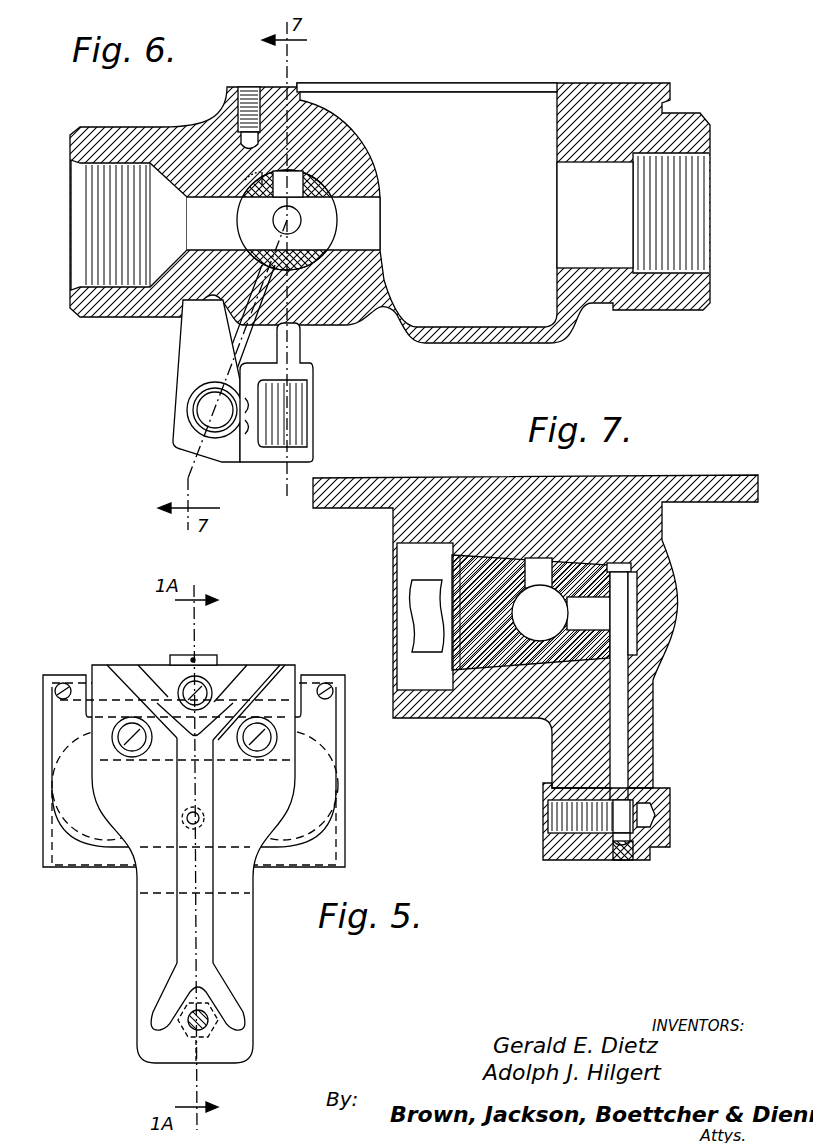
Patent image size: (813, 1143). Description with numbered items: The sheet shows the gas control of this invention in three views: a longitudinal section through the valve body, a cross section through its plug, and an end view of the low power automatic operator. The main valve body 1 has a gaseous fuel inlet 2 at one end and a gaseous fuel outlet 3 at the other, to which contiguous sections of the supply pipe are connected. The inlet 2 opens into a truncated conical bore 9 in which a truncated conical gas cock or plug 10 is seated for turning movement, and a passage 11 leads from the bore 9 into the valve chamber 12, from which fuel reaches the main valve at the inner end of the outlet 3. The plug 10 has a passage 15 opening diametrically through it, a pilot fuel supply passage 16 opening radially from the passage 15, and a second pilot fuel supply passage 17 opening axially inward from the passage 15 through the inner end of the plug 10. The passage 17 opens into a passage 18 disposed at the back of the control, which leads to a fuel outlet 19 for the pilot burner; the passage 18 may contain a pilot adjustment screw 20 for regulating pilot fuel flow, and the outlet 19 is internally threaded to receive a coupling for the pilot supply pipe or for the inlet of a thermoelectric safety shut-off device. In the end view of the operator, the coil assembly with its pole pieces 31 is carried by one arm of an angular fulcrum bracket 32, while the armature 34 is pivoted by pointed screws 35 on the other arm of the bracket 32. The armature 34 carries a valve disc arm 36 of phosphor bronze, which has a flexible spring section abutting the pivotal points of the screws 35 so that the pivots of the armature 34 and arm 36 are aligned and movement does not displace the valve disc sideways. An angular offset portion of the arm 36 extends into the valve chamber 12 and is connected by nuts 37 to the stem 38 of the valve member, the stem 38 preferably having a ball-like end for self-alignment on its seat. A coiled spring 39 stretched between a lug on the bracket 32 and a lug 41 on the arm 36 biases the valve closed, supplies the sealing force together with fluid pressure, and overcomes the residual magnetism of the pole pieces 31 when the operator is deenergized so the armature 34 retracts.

In FIG. 6, the main valve body 1 is at (200, 120).
In FIG. 7, the main valve body 1 is at (665, 530).
In FIG. 6, the gaseous fuel inlet 2 is at (88, 277).
In FIG. 6, the gaseous fuel outlet 3 is at (690, 220).
In FIG. 6, the truncated conical bore 9 is at (246, 184).
In FIG. 7, the truncated conical bore 9 is at (480, 553).
In FIG. 6, the truncated conical gas cock or plug 10 is at (266, 190).
In FIG. 7, the truncated conical gas cock or plug 10 is at (488, 660).
In FIG. 6, the passage 11 is at (367, 201).
In FIG. 6, the valve chamber 12 is at (492, 330).
In FIG. 6, the passage 15 is at (259, 249).
In FIG. 7, the passage 15 is at (525, 662).
In FIG. 6, the pilot fuel supply passage 16 is at (347, 137).
In FIG. 7, the pilot fuel supply passage 16 is at (543, 558).
In FIG. 6, the second pilot fuel supply passage 17 is at (300, 223).
In FIG. 7, the second pilot fuel supply passage 17 is at (600, 616).
In FIG. 6, the passage 18 is at (248, 340).
In FIG. 7, the passage 18 is at (622, 728).
In FIG. 6, the fuel outlet for the pilot burner 19 is at (310, 422).
In FIG. 6, the pilot adjustment screw 20 is at (202, 407).
In FIG. 7, the pilot adjustment screw 20 is at (587, 830).
In FIG. 5, the pole pieces 31 is at (60, 752).
In FIG. 5, the angular fulcrum bracket 32 is at (318, 855).
In FIG. 5, the armature 34 is at (314, 800).
In FIG. 5, the pointed screws 35 is at (64, 683).
In FIG. 5, the valve disc arm 36 is at (145, 886).
In FIG. 5, the nuts 37 is at (210, 1065).
In FIG. 5, the stem 38 is at (206, 1020).
In FIG. 5, the coiled spring 39 is at (190, 657).
In FIG. 5, the lug 41 is at (208, 656).